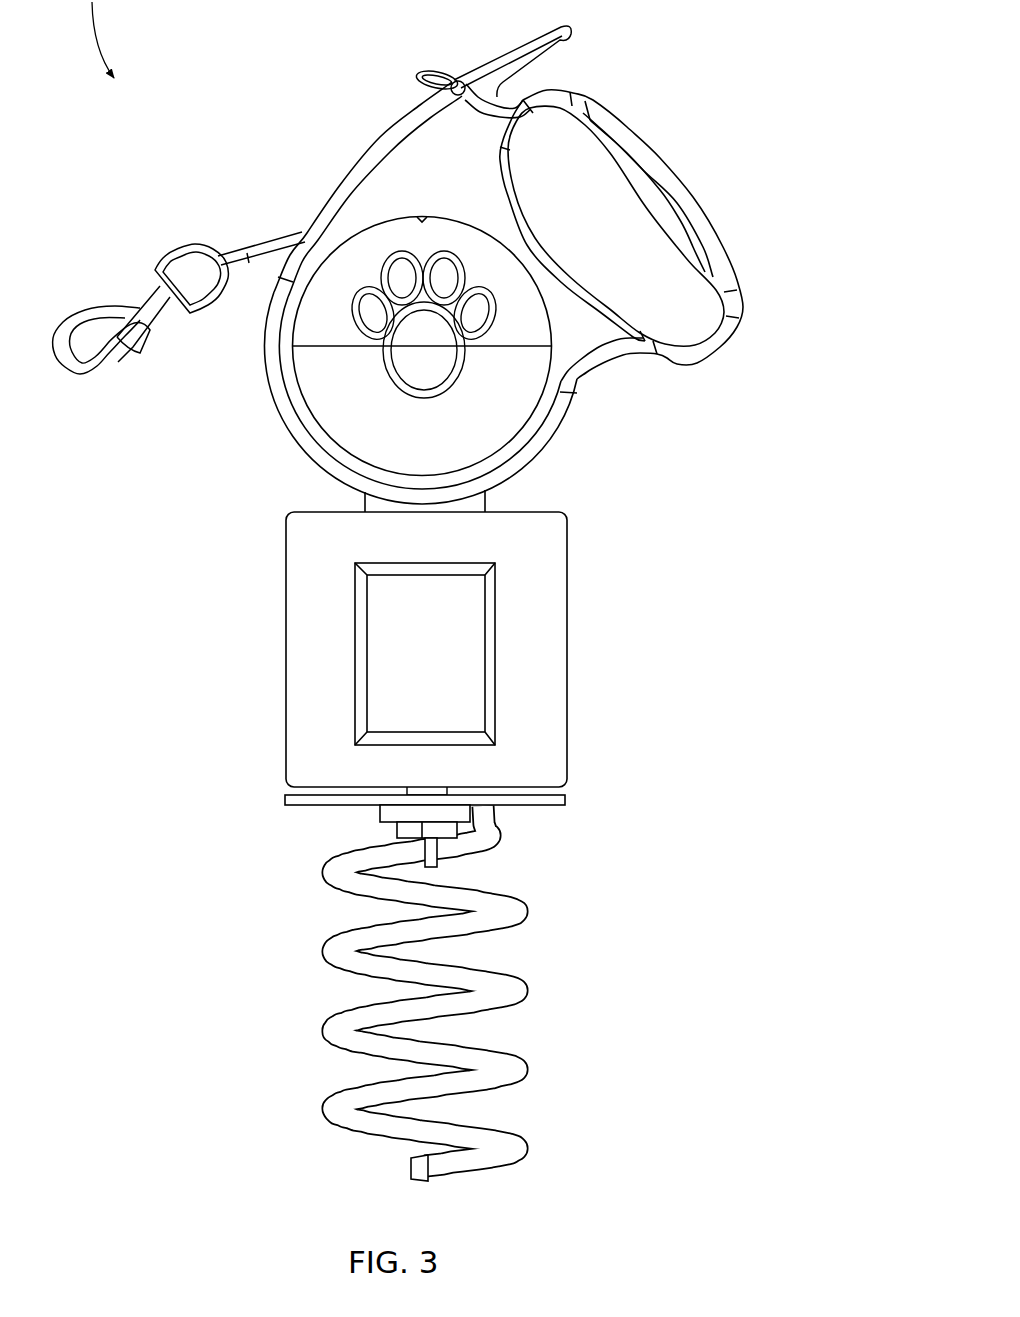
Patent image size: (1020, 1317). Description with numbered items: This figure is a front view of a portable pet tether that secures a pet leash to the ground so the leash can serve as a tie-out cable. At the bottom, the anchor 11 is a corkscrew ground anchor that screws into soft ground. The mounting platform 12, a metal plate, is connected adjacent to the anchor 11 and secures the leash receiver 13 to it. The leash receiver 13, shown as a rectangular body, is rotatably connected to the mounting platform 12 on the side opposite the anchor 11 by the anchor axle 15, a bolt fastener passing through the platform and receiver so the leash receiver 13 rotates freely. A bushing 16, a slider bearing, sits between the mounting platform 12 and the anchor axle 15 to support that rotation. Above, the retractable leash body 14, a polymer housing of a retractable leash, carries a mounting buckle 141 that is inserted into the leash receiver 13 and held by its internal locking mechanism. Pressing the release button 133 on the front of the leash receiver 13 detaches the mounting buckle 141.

The anchor 11 is at (303, 1056).
The mounting platform 12 is at (588, 800).
The leash receiver 13 is at (587, 647).
The release button 133 is at (388, 667).
The retractable leash body 14 is at (754, 198).
The mounting buckle 141 is at (512, 493).
The anchor axle 15 is at (392, 834).
The bushing 16 is at (372, 819).